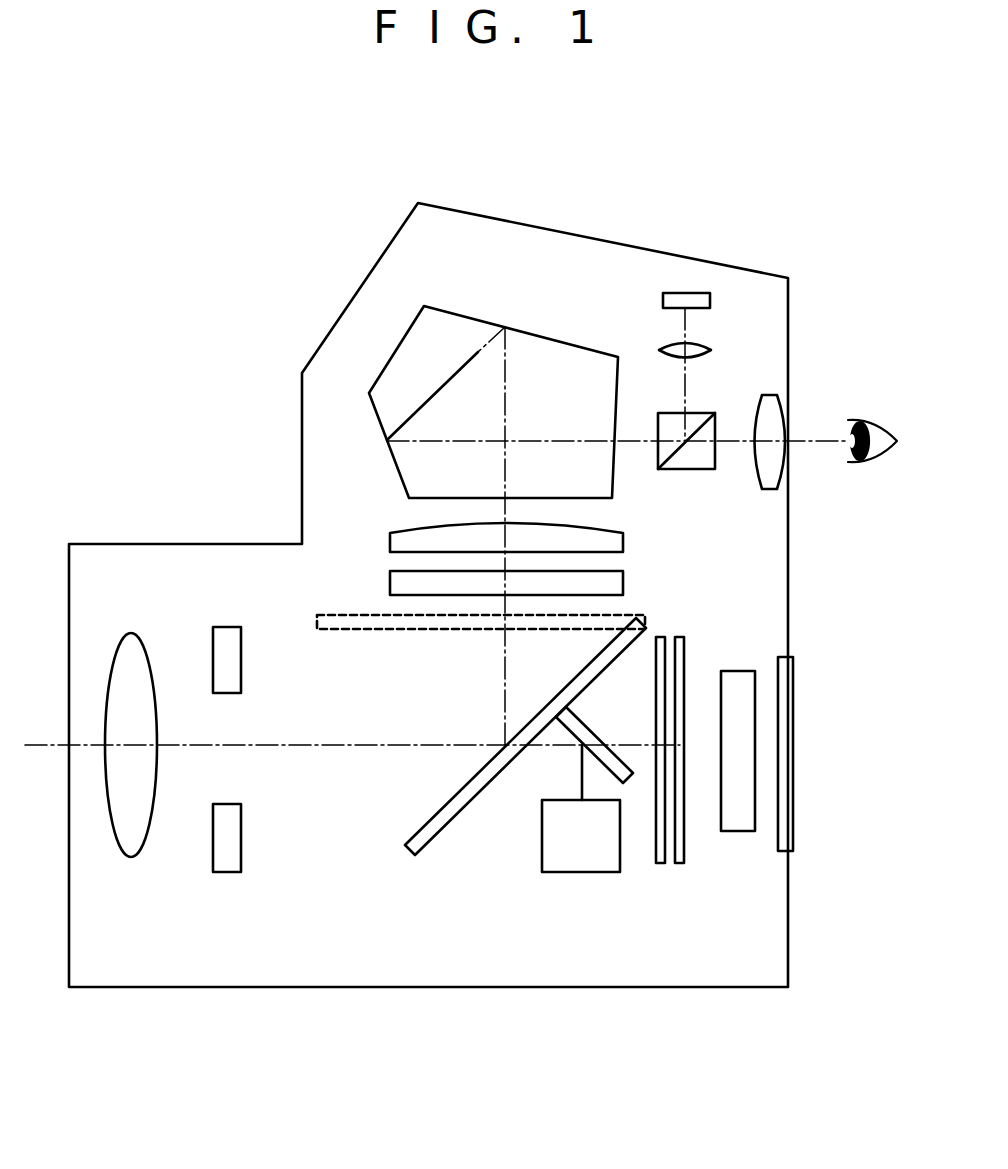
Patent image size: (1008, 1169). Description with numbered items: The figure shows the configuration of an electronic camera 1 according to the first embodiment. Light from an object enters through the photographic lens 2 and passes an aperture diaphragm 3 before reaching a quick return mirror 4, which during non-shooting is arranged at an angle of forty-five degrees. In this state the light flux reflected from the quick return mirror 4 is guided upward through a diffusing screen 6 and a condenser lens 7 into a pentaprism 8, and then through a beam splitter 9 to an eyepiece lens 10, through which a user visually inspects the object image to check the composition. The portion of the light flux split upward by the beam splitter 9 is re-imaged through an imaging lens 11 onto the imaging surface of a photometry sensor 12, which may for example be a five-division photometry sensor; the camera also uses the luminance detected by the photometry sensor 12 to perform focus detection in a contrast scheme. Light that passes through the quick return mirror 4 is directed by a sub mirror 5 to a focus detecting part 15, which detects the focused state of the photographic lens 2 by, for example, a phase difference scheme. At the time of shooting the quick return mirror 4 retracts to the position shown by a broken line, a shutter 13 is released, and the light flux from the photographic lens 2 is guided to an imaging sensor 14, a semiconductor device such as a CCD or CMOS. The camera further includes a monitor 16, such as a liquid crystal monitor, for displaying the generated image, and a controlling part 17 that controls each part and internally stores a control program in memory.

The electronic camera 1 is at (286, 398).
The photographic lens 2 is at (132, 633).
The aperture diaphragm 3 is at (230, 627).
The quick return mirror 4 is at (405, 845).
The sub mirror 5 is at (607, 745).
The diffusing screen 6 is at (390, 585).
The condenser lens 7 is at (390, 540).
The pentaprism 8 is at (452, 308).
The beam splitter 9 is at (658, 432).
The eyepiece lens 10 is at (770, 489).
The imaging lens 11 is at (711, 350).
The photometry sensor 12 is at (663, 300).
The shutter 13 is at (660, 637).
The imaging sensor 14 is at (680, 637).
The focus detecting part 15 is at (542, 830).
The monitor 16 is at (793, 666).
The controlling part 17 is at (730, 831).